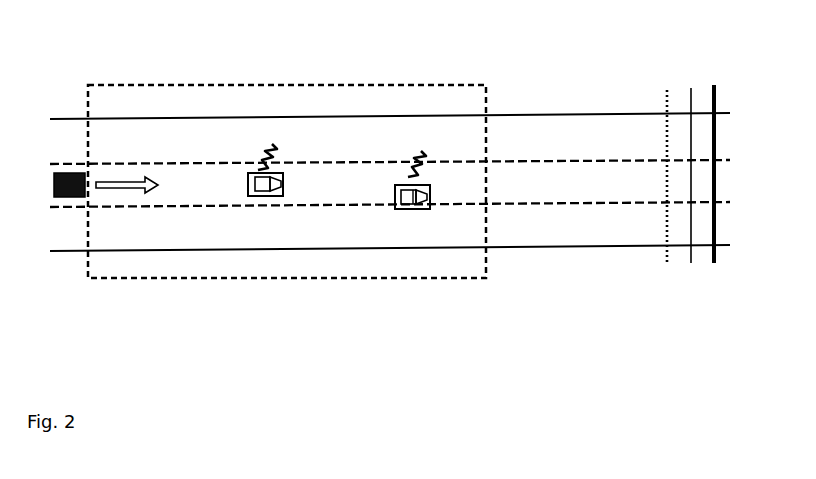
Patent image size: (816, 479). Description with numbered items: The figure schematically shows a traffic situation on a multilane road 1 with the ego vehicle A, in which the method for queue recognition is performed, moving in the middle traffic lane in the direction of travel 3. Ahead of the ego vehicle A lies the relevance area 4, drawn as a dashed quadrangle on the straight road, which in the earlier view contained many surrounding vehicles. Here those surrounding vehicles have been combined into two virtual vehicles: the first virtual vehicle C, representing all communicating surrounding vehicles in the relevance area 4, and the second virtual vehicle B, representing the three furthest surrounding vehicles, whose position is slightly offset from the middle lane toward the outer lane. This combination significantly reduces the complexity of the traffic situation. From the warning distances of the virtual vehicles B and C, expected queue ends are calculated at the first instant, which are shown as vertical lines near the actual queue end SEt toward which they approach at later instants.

The multilane road 1 is at (64, 251).
The direction of travel 3 is at (127, 188).
The relevance area 4 is at (118, 85).
The ego vehicle A is at (72, 173).
The second virtual vehicle B is at (402, 184).
The first virtual vehicle C is at (255, 173).
The actual queue end SEt is at (665, 90).